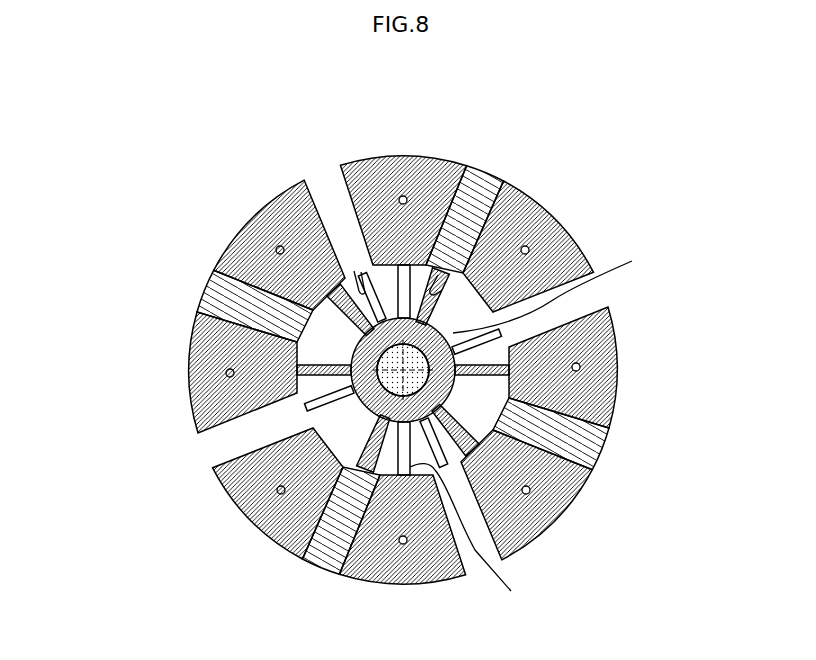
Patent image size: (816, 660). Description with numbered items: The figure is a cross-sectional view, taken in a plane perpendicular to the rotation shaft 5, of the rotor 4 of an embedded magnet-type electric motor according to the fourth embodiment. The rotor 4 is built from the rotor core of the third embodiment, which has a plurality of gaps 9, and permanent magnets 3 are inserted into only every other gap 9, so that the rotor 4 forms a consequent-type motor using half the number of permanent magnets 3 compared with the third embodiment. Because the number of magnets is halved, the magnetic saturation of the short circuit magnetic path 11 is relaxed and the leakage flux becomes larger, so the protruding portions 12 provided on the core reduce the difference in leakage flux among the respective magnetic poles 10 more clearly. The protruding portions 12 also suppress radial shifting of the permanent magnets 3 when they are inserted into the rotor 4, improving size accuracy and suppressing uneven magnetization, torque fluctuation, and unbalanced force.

The permanent magnet 3 is at (327, 558).
The rotor 4 is at (52, 79).
The rotation shaft 5 is at (550, 287).
The gap 9 is at (238, 435).
The magnetic pole 10 is at (240, 232).
The short circuit magnetic path 11 is at (354, 271).
The protruding portion 12 is at (212, 287).